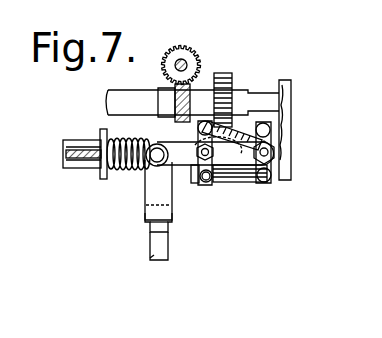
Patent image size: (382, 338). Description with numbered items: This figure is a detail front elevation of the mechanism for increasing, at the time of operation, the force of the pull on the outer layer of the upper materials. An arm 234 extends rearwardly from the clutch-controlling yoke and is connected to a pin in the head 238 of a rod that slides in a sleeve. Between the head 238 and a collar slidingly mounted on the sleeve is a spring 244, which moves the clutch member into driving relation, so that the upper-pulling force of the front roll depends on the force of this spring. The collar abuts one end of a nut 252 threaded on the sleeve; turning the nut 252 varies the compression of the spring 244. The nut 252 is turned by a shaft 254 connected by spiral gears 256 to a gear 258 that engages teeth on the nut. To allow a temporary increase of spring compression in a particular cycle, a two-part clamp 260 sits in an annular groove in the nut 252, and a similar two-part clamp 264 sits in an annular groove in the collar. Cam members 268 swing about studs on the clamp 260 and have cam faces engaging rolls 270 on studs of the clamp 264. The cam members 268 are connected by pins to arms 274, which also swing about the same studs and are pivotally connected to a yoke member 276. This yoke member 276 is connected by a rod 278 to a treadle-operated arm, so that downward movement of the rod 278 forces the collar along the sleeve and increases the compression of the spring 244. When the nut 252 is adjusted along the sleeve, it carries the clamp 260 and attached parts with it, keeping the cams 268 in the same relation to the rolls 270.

The arm 234 is at (66, 158).
The head 238 is at (102, 140).
The spring 244 is at (116, 172).
The nut 252 is at (225, 183).
The shaft 254 is at (186, 60).
The spiral gears 256 is at (175, 98).
The gear 258 is at (229, 74).
The two-part clamp 260 is at (273, 170).
The two-part clamp 264 is at (205, 182).
The cam members 268 is at (232, 126).
The rolls 270 is at (236, 133).
The arms 274 is at (171, 156).
The yoke member 276 is at (145, 208).
The rod 278 is at (165, 248).